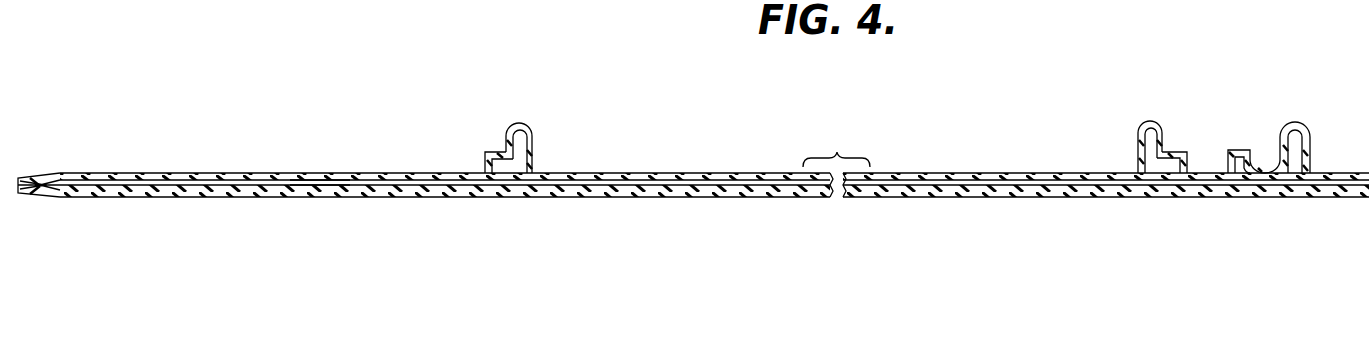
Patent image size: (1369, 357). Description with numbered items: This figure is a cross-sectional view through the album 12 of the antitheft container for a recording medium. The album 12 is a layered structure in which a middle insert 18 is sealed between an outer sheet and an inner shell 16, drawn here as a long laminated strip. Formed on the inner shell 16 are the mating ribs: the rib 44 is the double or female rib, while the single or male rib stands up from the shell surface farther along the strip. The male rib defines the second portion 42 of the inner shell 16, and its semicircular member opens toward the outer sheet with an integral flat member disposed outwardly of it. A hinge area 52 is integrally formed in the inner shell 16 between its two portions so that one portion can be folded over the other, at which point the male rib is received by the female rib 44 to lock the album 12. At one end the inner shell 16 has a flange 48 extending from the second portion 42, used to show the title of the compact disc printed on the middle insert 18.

The album 12 is at (959, 86).
The inner shell 16 is at (330, 152).
The middle insert 18 is at (201, 189).
The second portion 42 is at (708, 173).
The rib 44 is at (1268, 136).
The flange 48 is at (147, 173).
The hinge area 52 is at (1223, 198).